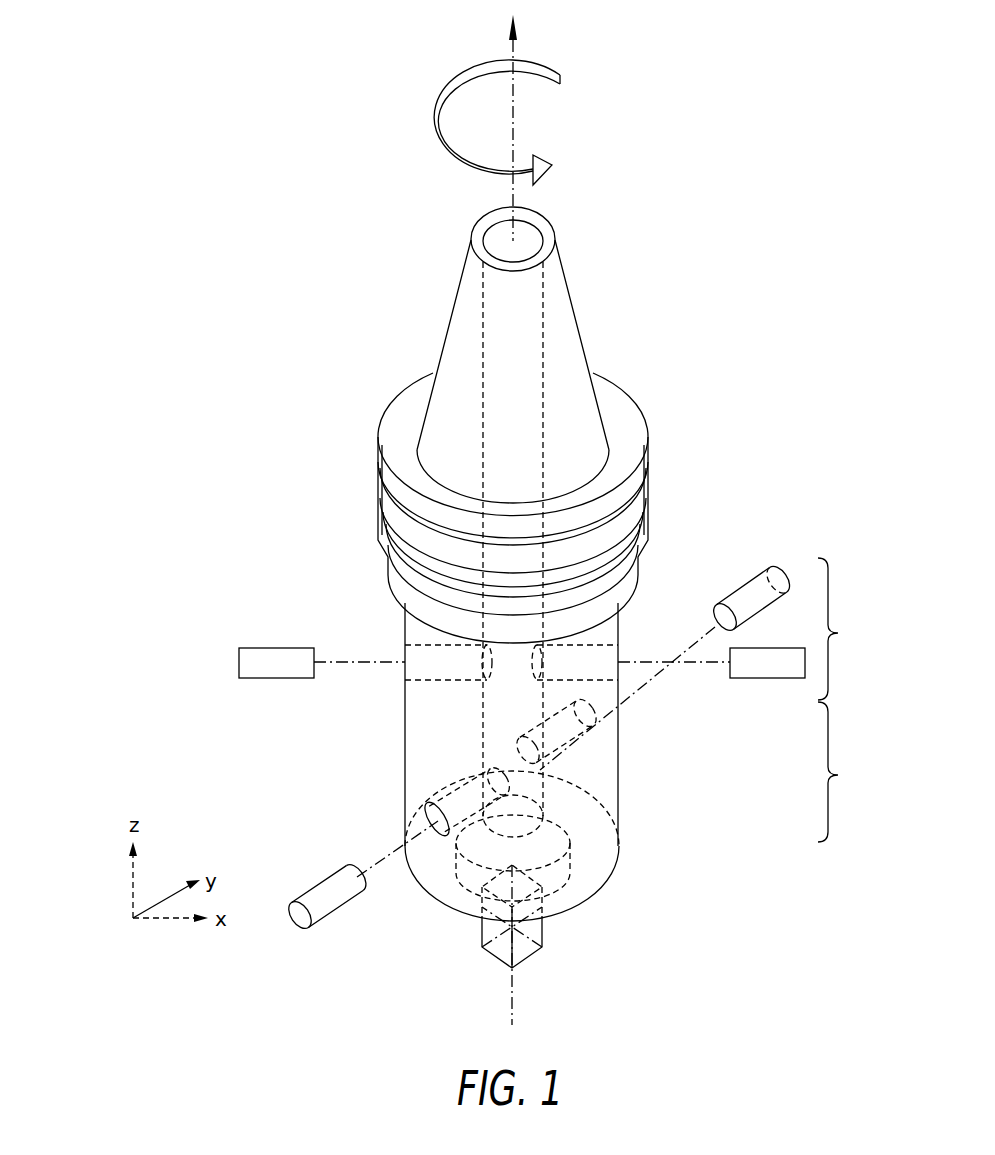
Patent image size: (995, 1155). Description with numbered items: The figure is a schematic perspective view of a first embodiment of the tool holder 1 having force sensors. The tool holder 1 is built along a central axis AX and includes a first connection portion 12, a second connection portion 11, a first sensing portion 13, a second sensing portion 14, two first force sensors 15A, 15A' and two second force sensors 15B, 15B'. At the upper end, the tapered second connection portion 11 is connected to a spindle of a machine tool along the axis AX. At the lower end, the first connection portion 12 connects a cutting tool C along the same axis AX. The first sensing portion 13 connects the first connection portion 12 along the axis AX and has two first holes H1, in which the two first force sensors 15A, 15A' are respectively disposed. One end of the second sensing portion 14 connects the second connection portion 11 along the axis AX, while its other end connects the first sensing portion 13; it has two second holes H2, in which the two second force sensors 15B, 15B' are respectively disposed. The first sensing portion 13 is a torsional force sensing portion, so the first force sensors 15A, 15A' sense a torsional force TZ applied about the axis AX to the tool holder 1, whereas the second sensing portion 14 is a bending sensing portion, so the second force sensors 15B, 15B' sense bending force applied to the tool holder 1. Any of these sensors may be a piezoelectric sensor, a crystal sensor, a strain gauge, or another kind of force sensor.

The tool holder 1 is at (352, 350).
The second connection portion 11 is at (558, 355).
The first connection portion 12 is at (557, 892).
The first sensing portion 13 is at (844, 772).
The second sensing portion 14 is at (844, 629).
The first force sensor 15A is at (361, 899).
The first force sensor 15A' is at (667, 647).
The second force sensor 15B is at (276, 630).
The second force sensor 15B' is at (767, 697).
The first hole H1 is at (414, 823).
The second hole H2 is at (393, 674).
The cutting tool C is at (505, 948).
The axis AX is at (510, 47).
The torsional force TZ is at (515, 122).